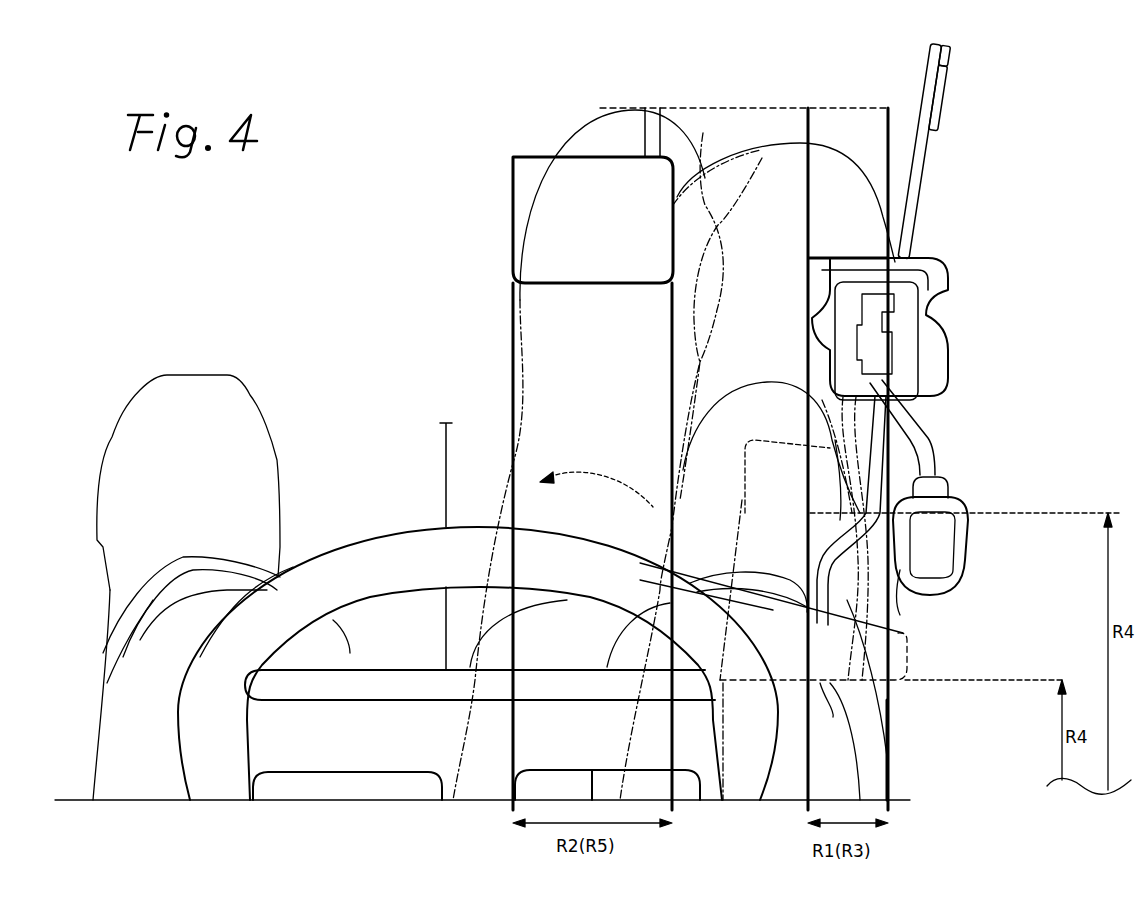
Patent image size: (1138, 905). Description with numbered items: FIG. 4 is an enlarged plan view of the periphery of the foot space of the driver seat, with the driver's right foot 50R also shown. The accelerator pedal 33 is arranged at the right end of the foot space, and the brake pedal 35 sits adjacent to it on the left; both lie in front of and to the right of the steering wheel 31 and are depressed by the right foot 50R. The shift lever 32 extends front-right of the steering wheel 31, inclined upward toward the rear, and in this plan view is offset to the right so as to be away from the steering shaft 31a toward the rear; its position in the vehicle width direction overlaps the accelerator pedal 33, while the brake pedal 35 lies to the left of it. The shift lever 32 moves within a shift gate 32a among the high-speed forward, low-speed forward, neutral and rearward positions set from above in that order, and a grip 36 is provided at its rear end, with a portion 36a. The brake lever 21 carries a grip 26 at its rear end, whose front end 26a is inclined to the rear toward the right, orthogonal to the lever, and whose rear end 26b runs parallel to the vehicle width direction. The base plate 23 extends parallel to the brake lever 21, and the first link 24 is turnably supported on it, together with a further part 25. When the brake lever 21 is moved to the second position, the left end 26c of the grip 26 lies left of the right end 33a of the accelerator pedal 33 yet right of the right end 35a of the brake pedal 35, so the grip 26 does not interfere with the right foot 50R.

The brake lever 21 is at (845, 573).
The base plate 23 is at (927, 42).
The first link 24 is at (973, 130).
The lever knob 25 is at (997, 93).
The grip 26 is at (797, 656).
The front end of the grip 26a is at (770, 578).
The rear end of the grip 26b is at (833, 717).
The left end of the grip 26c is at (660, 567).
The steering wheel 31 is at (380, 547).
The steering shaft 31a is at (450, 480).
The shift lever 32 is at (933, 428).
The shift gate 32a is at (905, 285).
The accelerator pedal 33 is at (860, 232).
The right end of the accelerator pedal 33a is at (890, 145).
The brake pedal 35 is at (608, 232).
The right end of the brake pedal 35a is at (677, 197).
The grip 36 is at (942, 560).
The knob lower portion 36a is at (933, 600).
The right foot 50R is at (890, 763).